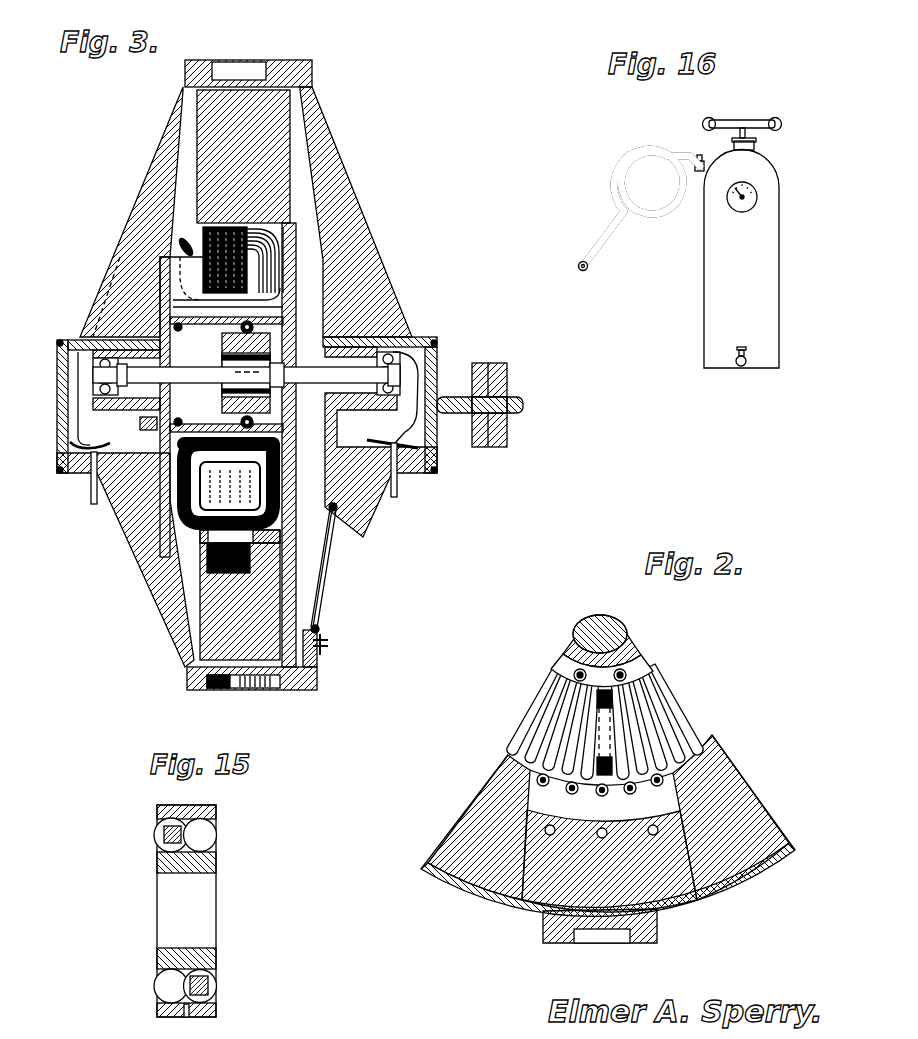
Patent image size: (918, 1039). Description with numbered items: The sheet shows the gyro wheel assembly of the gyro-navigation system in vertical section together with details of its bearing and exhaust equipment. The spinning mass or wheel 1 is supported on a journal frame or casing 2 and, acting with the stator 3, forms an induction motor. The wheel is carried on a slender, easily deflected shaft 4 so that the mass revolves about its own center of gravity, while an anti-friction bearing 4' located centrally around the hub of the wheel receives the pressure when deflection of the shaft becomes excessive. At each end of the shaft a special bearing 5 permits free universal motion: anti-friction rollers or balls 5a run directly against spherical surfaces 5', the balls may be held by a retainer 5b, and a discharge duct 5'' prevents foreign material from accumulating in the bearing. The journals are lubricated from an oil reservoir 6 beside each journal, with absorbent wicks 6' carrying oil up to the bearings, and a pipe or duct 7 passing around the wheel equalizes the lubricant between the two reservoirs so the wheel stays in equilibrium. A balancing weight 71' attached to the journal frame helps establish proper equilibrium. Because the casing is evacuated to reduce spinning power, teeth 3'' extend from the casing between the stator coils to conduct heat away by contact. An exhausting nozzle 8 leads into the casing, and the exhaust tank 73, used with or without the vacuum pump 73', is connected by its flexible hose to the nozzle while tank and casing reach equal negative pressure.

In FIG. 3, the spinning mass or wheel 1 is at (246, 378).
In FIG. 3, the journal frame or casing 2 is at (247, 377).
In FIG. 3, the stator 3 is at (226, 367).
In FIG. 3, the teeth 3'' is at (228, 415).
In FIG. 2, the teeth 3'' is at (617, 719).
In FIG. 3, the shaft 4 is at (246, 373).
In FIG. 3, the anti-friction bearing 4' is at (226, 374).
In FIG. 3, the bearing 5 is at (108, 391).
In FIG. 15, the bearing 5 is at (201, 911).
In FIG. 3, the spherical surface 5' is at (267, 386).
In FIG. 15, the spherical surface 5' is at (169, 804).
In FIG. 15, the anti-friction rollers or balls 5a is at (214, 837).
In FIG. 15, the retainer 5b is at (164, 834).
In FIG. 15, the discharge duct 5'' is at (198, 1021).
In FIG. 3, the oil reservoir 6 is at (244, 432).
In FIG. 3, the absorbent wick 6' is at (300, 398).
In FIG. 3, the pipe or duct 7 is at (92, 490).
In FIG. 3, the balancing weight 71' is at (510, 423).
In FIG. 3, the exhausting nozzle 8 is at (328, 650).
In FIG. 16, the exhausting nozzle 8 is at (740, 187).
In FIG. 16, the exhaust tank 73 is at (741, 259).
In FIG. 16, the vacuum pump 73' is at (752, 135).